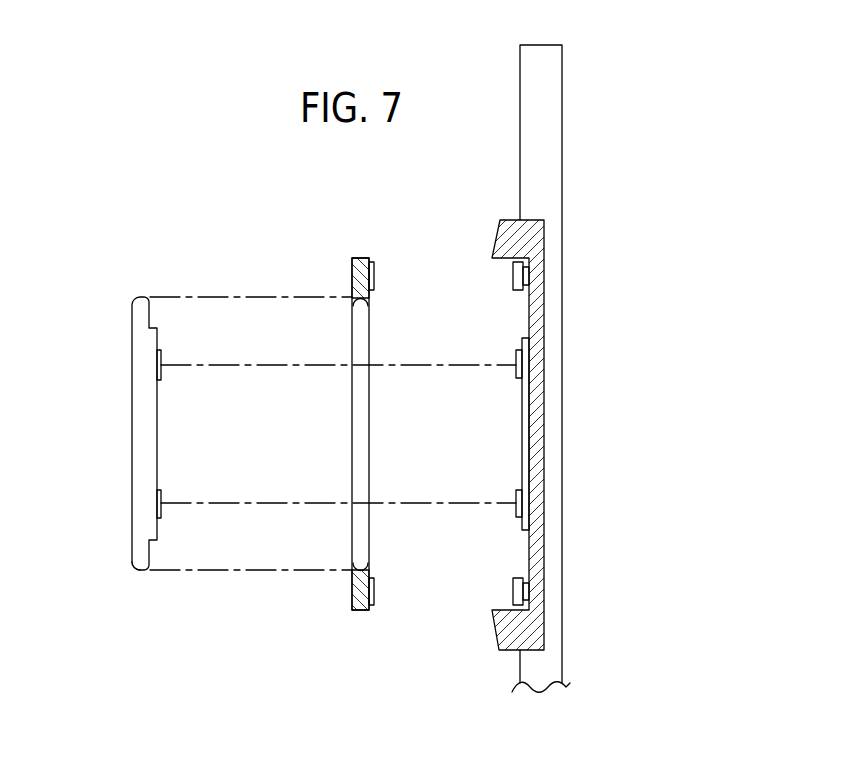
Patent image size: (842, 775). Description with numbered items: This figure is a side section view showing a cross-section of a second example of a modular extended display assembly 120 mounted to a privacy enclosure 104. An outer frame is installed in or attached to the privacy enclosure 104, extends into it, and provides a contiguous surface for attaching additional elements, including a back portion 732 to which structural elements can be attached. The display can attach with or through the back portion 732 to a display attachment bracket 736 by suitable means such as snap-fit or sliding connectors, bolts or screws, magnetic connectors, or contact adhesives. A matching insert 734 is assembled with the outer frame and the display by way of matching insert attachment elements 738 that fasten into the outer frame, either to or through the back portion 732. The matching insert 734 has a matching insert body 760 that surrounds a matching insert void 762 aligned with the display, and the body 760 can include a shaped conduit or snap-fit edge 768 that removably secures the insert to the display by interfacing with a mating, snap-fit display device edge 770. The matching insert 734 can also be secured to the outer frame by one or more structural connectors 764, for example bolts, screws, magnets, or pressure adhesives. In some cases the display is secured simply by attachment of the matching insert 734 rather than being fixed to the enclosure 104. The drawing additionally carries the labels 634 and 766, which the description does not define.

The privacy enclosure 104 is at (592, 108).
The modular extended display assembly 120 is at (452, 205).
The fixture assembly 634 is at (322, 453).
The back portion 732 is at (528, 566).
The matching insert 734 is at (326, 255).
The display attachment bracket 736 is at (522, 425).
The matching insert attachment elements 738 is at (517, 290).
The matching insert body 760 is at (352, 600).
The matching insert void 762 is at (132, 452).
The structural connectors 764 is at (374, 276).
The pins 766 is at (162, 357).
The snap-fit edge 768 is at (357, 571).
The display device edge 770 is at (134, 570).